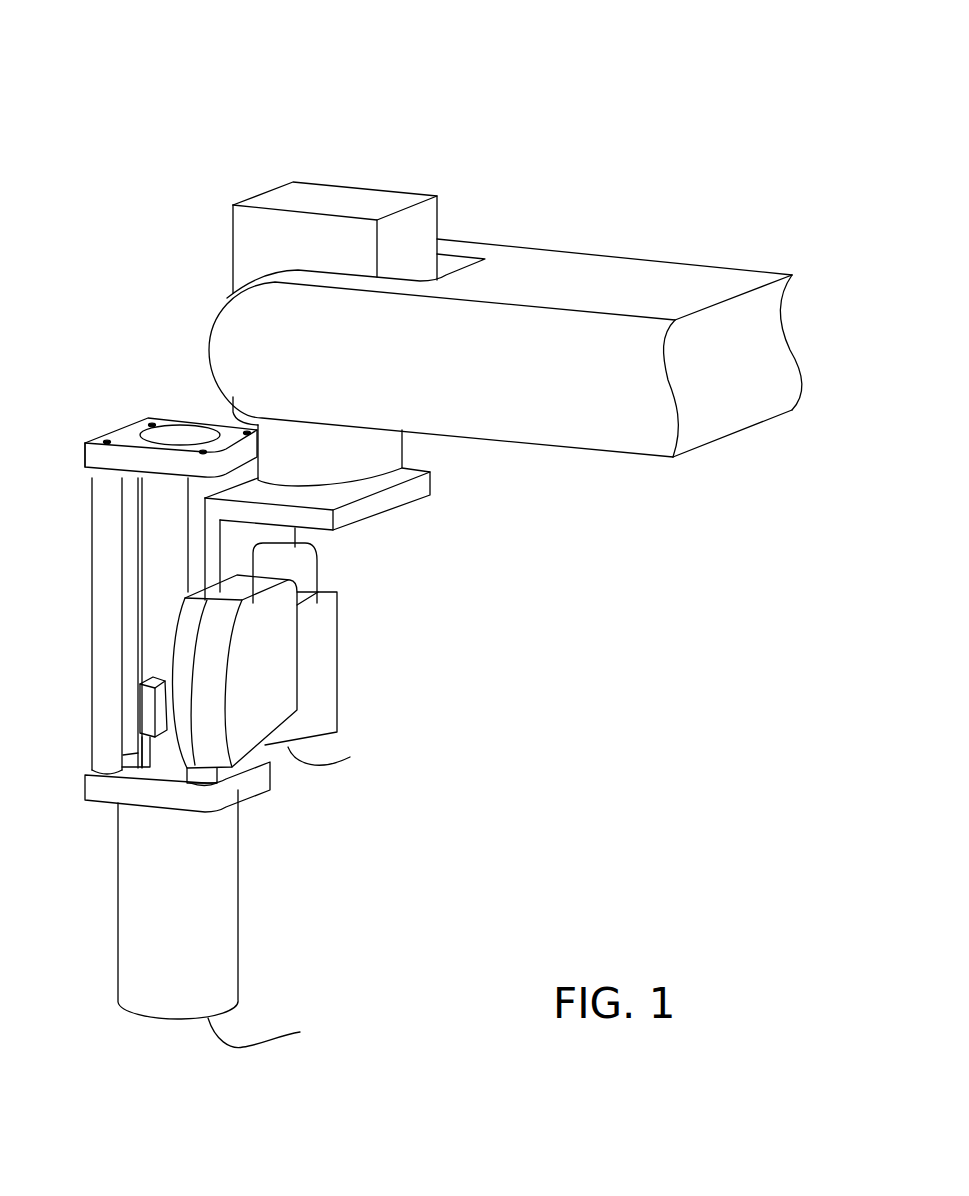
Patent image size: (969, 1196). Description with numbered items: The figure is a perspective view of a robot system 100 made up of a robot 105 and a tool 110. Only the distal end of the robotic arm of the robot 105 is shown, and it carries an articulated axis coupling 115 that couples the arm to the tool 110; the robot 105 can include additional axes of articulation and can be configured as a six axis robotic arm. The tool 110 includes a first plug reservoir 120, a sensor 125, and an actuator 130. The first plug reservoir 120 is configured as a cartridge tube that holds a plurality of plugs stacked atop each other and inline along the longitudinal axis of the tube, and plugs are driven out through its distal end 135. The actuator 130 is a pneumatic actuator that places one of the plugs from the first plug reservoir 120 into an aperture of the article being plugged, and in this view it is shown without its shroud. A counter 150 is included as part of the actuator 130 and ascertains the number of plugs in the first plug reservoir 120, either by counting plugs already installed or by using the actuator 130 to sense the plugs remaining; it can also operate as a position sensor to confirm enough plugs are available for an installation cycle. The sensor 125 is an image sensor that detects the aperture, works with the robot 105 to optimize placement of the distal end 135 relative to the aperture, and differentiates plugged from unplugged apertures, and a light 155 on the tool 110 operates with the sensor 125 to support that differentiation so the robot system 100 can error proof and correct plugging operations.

The robot system 100 is at (116, 45).
The robot 105 is at (633, 258).
The tool 110 is at (443, 557).
The articulated axis coupling 115 is at (232, 248).
The first plug reservoir 120 is at (240, 900).
The sensor 125 is at (278, 665).
The actuator 130 is at (90, 562).
The distal end 135 is at (300, 1032).
The counter 150 is at (130, 713).
The light 155 is at (300, 757).